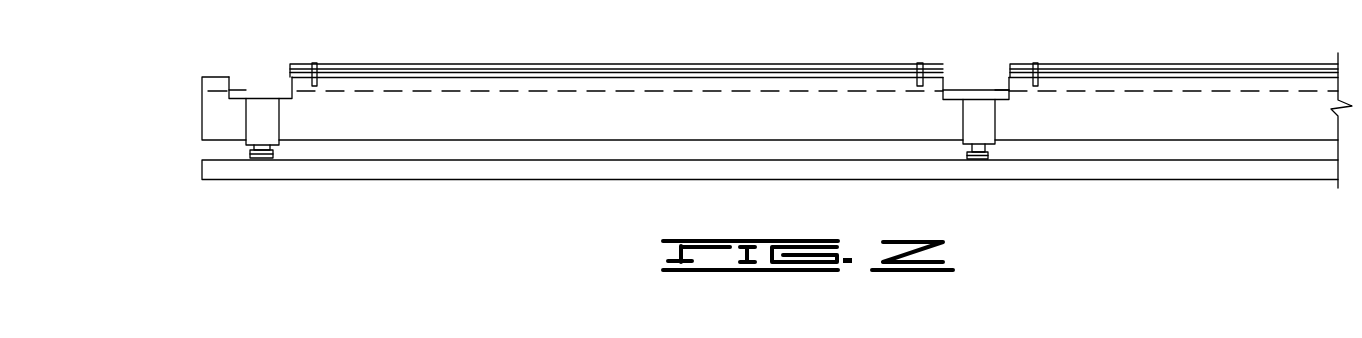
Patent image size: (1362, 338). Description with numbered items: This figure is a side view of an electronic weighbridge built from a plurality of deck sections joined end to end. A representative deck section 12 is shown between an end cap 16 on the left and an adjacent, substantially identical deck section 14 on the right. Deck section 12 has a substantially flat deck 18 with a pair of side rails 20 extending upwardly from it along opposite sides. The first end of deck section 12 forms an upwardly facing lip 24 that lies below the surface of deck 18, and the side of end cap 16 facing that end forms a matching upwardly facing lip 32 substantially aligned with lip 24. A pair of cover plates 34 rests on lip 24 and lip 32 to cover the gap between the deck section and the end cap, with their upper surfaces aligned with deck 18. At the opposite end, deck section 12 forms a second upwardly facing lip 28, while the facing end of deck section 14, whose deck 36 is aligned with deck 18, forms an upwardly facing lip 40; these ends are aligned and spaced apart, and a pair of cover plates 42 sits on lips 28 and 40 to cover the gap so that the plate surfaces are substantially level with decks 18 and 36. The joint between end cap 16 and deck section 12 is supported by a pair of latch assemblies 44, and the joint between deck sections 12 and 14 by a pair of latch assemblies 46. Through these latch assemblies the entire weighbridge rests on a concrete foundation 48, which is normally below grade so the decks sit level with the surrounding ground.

The deck section 12 is at (693, 80).
The deck section 14 is at (1230, 92).
The end cap 16 is at (215, 97).
The deck 18 is at (595, 93).
The side rails 20 is at (497, 72).
The upwardly facing lip 24 is at (283, 90).
The second upwardly facing lip 28 is at (955, 88).
The upwardly facing lip 32 is at (242, 88).
The cover plates 34 is at (265, 90).
The deck 36 is at (1110, 92).
The upwardly facing lip 40 is at (1002, 90).
The cover plates 42 is at (977, 90).
The latch modules or assemblies 44 is at (260, 158).
The latch modules or assemblies 46 is at (980, 159).
The foundation 48 is at (478, 170).